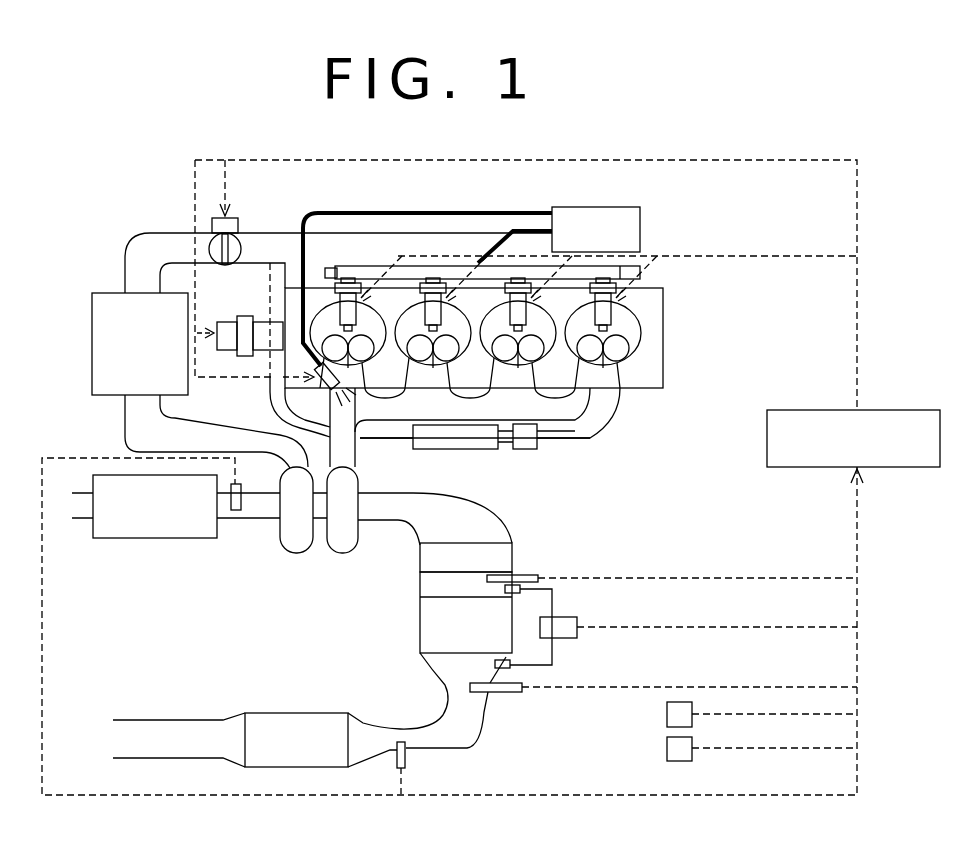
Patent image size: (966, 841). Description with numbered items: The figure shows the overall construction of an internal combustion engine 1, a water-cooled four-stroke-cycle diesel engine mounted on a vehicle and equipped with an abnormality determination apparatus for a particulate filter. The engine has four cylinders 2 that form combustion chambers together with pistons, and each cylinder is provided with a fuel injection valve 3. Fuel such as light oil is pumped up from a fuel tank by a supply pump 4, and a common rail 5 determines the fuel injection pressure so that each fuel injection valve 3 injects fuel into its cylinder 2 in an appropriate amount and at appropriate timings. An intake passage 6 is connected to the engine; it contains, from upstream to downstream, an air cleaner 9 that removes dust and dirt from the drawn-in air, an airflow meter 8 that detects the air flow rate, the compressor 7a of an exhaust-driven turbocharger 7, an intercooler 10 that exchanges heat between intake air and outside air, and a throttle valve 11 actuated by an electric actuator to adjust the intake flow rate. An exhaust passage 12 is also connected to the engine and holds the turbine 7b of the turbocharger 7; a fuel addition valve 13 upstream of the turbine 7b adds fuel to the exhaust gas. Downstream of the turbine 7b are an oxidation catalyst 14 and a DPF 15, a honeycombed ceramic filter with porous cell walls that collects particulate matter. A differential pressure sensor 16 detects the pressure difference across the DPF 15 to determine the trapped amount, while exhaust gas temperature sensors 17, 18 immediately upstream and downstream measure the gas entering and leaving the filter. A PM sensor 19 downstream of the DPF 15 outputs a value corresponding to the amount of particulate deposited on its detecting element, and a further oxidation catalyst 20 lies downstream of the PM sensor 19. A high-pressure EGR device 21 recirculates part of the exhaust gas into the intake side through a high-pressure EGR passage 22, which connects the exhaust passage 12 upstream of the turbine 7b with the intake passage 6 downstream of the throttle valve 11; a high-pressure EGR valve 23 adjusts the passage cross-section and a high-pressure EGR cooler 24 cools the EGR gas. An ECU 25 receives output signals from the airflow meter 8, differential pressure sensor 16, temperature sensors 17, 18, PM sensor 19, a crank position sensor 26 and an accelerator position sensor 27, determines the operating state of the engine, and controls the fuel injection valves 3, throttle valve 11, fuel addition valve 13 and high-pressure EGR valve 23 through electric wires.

The internal combustion engine 1 is at (62, 243).
The cylinder 2 is at (641, 332).
The fuel injection valve 3 is at (618, 308).
The supply pump 4 is at (641, 226).
The common rail 5 is at (640, 272).
The intake passage 6 is at (124, 275).
The turbocharger 7 is at (372, 600).
The compressor 7a is at (294, 553).
The turbine 7b is at (345, 553).
The airflow meter 8 is at (242, 490).
The air cleaner 9 is at (154, 540).
The intercooler 10 is at (92, 356).
The throttle valve 11 is at (243, 238).
The exhaust passage 12 is at (616, 403).
The fuel addition valve 13 is at (300, 392).
The oxidation catalyst 14 is at (514, 556).
The DPF 15 is at (420, 612).
The differential pressure sensor 16 is at (572, 618).
The exhaust gas temperature sensor 17 is at (536, 577).
The exhaust gas temperature sensor 18 is at (508, 694).
The PM sensor 19 is at (408, 760).
The oxidation catalyst 20 is at (300, 713).
The high-pressure EGR device 21 is at (548, 454).
The high-pressure EGR passage 22 is at (370, 445).
The high-pressure EGR valve 23 is at (226, 321).
The high-pressure EGR cooler 24 is at (432, 450).
The ECU 25 is at (818, 408).
The crank position sensor 26 is at (667, 716).
The accelerator position sensor 27 is at (667, 748).